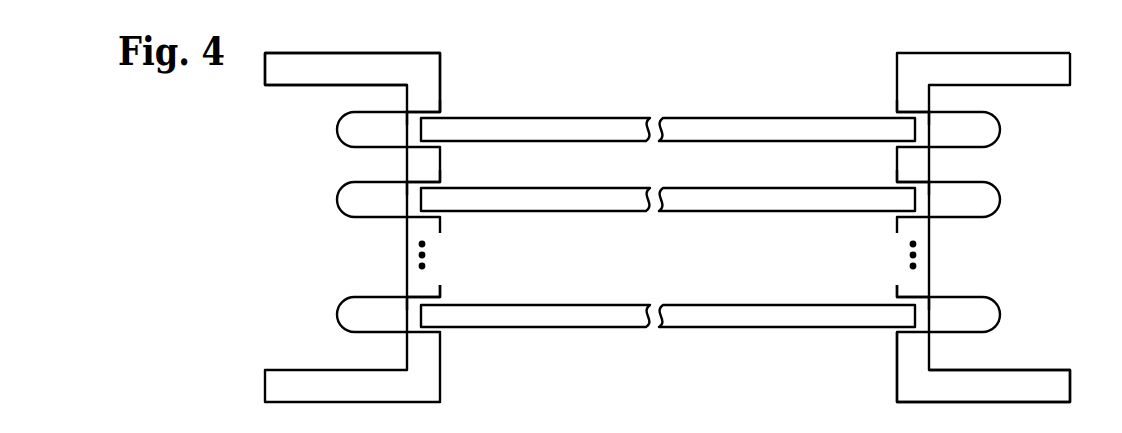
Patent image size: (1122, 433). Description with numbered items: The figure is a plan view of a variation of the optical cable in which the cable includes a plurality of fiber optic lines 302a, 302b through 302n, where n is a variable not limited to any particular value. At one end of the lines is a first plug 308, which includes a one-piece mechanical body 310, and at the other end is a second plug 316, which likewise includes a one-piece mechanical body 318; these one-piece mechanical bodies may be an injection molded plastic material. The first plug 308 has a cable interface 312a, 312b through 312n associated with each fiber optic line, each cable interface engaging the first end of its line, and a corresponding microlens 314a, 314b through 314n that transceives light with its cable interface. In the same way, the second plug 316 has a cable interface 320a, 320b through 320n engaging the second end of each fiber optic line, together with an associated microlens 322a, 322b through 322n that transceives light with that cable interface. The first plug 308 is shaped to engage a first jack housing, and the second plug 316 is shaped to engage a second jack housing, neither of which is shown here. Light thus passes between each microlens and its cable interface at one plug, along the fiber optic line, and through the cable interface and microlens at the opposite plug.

The first plug 308 is at (397, 33).
The one-piece mechanical body 310 is at (331, 79).
The cable interface 312a is at (414, 112).
The cable interface 312b is at (414, 182).
The cable interface 312n is at (414, 296).
The microlens 314a is at (354, 140).
The microlens 314b is at (354, 210).
The microlens 314n is at (352, 325).
The fiber optic line 302a is at (704, 118).
The fiber optic line 302b is at (704, 188).
The fiber optic line 302n is at (704, 305).
The second plug 316 is at (904, 33).
The one-piece mechanical body 318 is at (971, 396).
The cable interface 320a is at (922, 112).
The cable interface 320b is at (922, 182).
The cable interface 320n is at (922, 296).
The microlens 322a is at (935, 140).
The microlens 322b is at (935, 210).
The microlens 322n is at (935, 325).